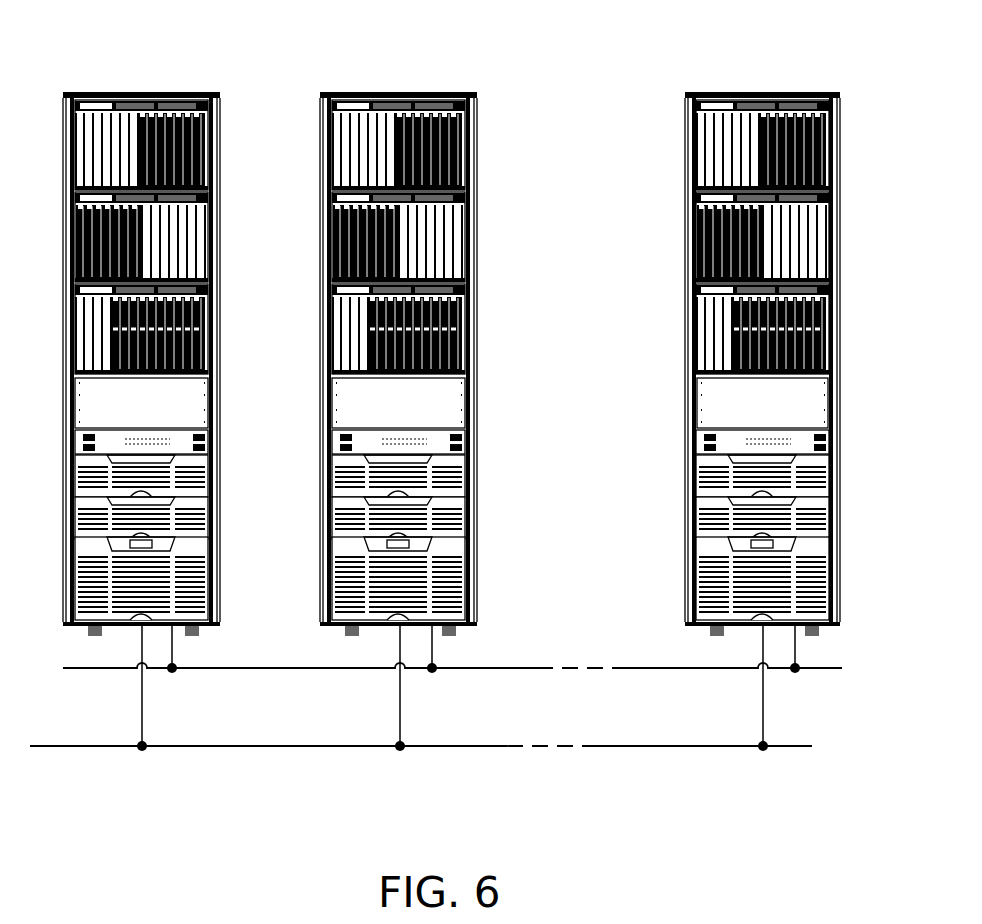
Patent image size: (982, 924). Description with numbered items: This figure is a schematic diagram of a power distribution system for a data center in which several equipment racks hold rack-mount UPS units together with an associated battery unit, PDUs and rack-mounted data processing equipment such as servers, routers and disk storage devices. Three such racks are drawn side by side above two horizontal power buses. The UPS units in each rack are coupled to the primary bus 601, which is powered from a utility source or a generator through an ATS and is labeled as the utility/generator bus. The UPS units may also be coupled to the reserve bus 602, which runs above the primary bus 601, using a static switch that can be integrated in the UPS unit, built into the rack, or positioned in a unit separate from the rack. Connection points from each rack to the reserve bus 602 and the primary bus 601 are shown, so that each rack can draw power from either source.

The reserve bus 602 is at (338, 669).
The primary bus 601 is at (355, 747).